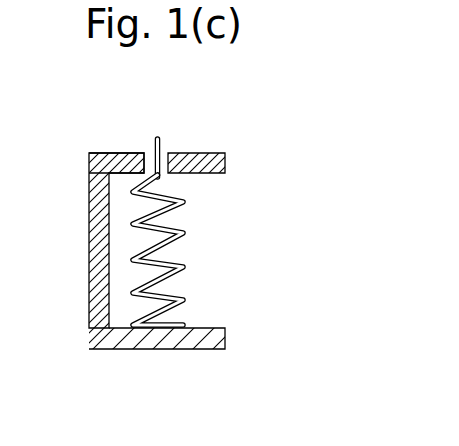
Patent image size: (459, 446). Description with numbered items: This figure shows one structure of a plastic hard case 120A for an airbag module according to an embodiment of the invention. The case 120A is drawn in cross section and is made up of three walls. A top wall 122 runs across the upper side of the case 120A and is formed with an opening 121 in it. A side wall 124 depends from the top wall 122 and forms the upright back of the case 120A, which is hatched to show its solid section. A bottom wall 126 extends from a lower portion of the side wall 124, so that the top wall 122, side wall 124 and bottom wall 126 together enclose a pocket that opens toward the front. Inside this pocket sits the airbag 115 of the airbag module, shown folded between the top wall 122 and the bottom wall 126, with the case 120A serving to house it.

The case 120A is at (229, 223).
The opening 121 is at (167, 145).
The top wall 122 is at (113, 152).
The side wall 124 is at (88, 293).
The bottom wall 126 is at (188, 350).
The airbag 115 is at (195, 204).